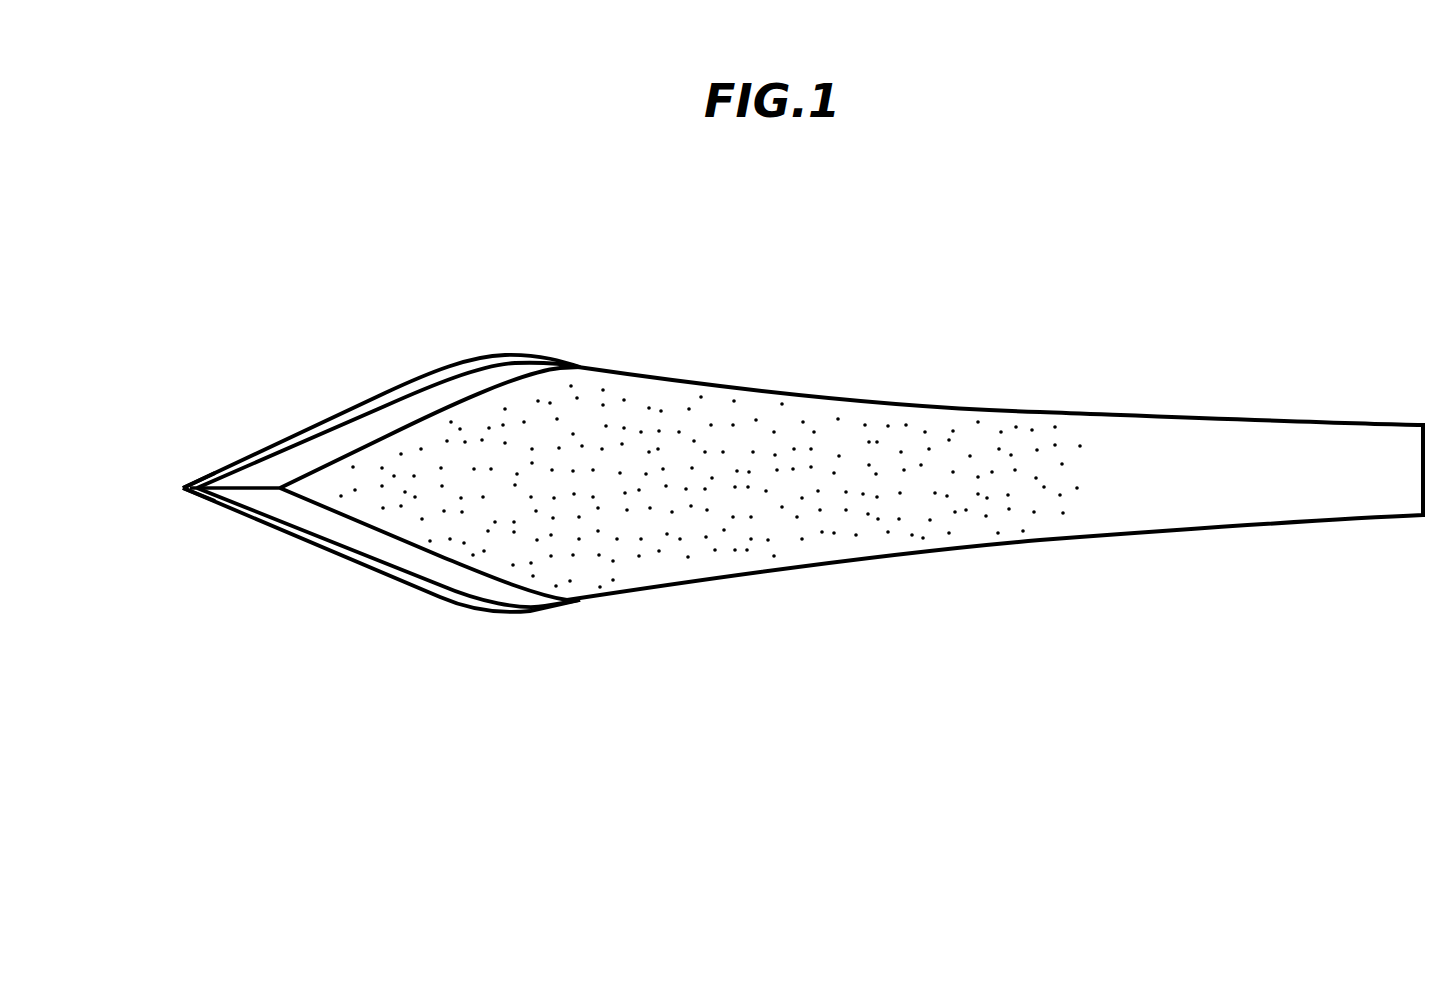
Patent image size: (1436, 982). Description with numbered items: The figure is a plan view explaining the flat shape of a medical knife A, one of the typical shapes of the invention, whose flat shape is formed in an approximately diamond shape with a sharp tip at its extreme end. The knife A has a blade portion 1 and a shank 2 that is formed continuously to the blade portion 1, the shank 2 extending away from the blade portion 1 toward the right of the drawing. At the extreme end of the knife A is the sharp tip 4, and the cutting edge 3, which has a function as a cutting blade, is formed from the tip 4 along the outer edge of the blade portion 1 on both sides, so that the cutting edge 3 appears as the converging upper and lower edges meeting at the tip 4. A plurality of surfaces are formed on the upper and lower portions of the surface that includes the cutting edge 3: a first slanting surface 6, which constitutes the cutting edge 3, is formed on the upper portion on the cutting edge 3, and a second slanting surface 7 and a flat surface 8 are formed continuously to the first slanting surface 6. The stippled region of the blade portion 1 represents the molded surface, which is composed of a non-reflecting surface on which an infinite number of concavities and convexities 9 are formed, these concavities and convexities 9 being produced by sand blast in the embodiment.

The blade portion 1 is at (559, 617).
The shank 2 is at (992, 406).
The cutting edge 3 is at (292, 435).
The tip 4 is at (183, 487).
The first slanting surface 6 is at (353, 557).
The second slanting surface 7 is at (428, 568).
The flat surface 8 is at (625, 390).
The concavities and convexities 9 is at (752, 436).
The knife A is at (214, 533).